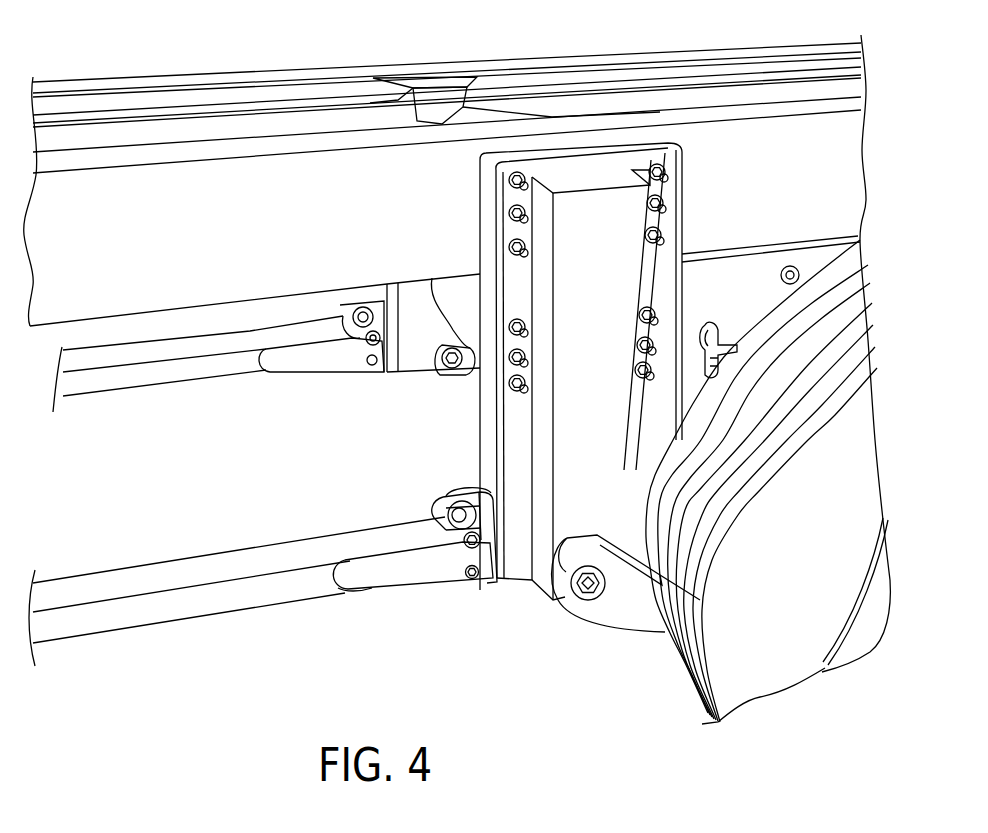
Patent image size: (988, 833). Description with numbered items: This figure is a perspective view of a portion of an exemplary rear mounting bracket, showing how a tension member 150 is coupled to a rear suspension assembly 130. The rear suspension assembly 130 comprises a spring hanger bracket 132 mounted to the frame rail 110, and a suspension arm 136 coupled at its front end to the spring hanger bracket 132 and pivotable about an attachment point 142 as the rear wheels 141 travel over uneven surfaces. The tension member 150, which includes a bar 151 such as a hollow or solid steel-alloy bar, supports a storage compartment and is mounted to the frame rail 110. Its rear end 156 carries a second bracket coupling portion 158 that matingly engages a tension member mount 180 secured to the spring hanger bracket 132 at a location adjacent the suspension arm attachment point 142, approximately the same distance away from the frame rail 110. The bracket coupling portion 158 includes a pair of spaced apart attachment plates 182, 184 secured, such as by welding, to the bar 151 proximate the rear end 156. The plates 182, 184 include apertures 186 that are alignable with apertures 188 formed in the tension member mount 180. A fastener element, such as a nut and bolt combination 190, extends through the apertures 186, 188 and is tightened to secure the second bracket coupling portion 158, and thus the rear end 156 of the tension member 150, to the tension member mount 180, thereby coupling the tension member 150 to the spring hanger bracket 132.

The frame rail 110 is at (283, 140).
The rear suspension assembly 130 is at (601, 644).
The spring hanger bracket 132 is at (632, 276).
The suspension arm 136 is at (601, 625).
The rear wheels 141 is at (754, 652).
The attachment point 142 is at (588, 597).
The tension member 150 is at (270, 524).
The bar 151 is at (138, 571).
The rear end 156 is at (350, 510).
The second bracket coupling portion 158 is at (377, 583).
The tension member mount 180 is at (390, 511).
The attachment plate 182 is at (413, 566).
The attachment plate 184 is at (383, 540).
The apertures 186 is at (443, 528).
The apertures 188 is at (430, 495).
The nut and bolt combination 190 is at (481, 579).